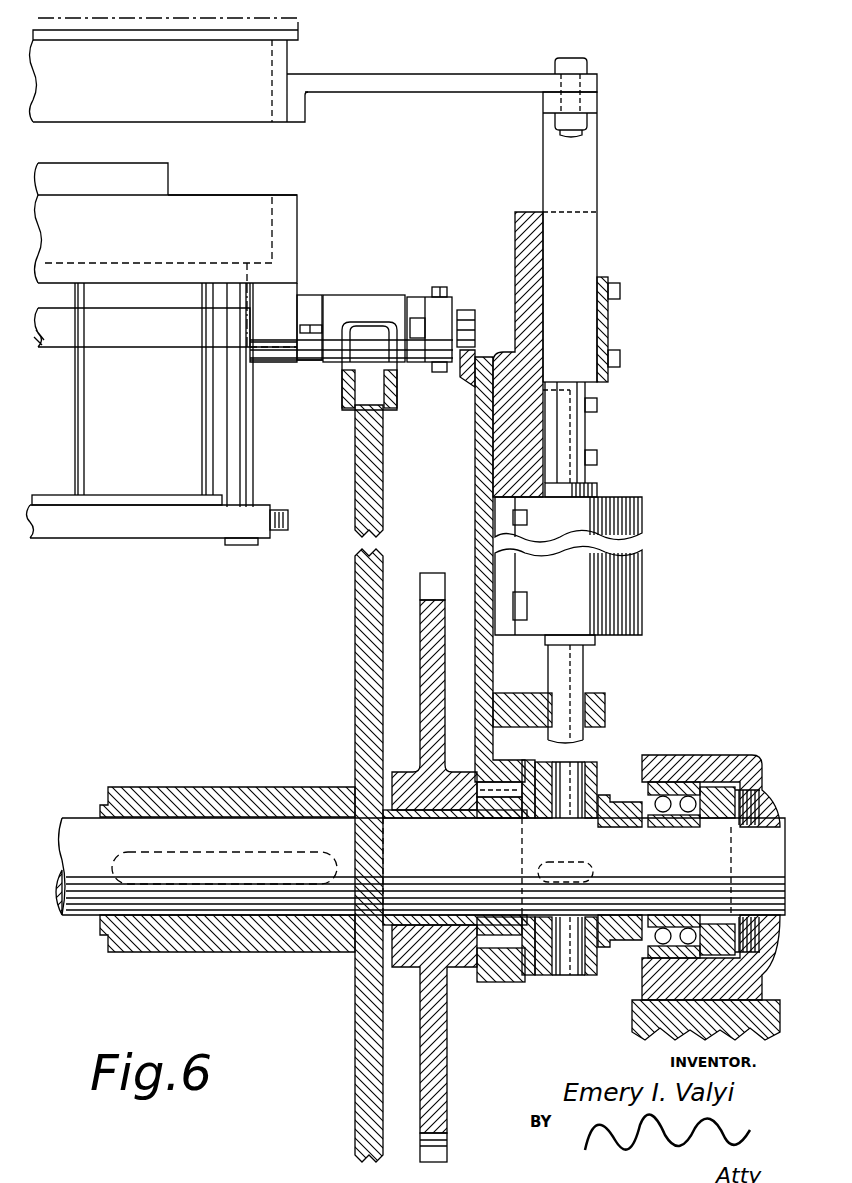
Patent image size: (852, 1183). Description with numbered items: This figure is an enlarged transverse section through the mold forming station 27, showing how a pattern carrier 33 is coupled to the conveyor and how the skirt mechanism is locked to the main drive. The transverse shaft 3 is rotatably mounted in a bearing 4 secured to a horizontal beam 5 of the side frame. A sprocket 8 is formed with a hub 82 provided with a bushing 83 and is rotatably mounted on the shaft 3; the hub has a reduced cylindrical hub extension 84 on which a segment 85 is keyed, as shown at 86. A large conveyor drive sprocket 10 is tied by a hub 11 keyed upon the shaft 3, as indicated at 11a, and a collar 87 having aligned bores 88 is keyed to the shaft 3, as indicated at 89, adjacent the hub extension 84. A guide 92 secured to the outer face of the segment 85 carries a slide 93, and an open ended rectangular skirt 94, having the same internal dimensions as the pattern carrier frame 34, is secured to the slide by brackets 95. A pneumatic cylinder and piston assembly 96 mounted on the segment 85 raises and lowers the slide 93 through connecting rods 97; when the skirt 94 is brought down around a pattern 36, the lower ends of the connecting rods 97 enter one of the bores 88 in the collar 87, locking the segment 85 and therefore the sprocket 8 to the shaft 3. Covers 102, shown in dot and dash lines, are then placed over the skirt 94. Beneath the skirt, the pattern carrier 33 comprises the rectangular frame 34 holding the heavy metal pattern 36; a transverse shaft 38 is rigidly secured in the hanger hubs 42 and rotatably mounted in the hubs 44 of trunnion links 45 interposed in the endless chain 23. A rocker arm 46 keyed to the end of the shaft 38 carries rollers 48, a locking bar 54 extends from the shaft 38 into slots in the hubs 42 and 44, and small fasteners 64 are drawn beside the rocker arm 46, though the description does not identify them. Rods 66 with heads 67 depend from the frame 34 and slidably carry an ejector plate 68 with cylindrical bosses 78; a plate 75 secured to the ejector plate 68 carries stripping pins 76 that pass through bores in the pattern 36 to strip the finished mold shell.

The covers 102 is at (305, 25).
The open ended rectangular skirt 94 is at (256, 115).
The brackets 95 is at (419, 76).
The slide 93 is at (585, 190).
The guide 92 is at (514, 234).
The segments 85 is at (474, 497).
The pattern 36 is at (173, 180).
The pattern carrier 33 is at (308, 235).
The rectangular frame 34 is at (229, 207).
The endless chain 23 is at (356, 420).
The hubs of the hangers 42 is at (316, 300).
The locking bar 54 is at (350, 333).
The hubs of the trunnion links 44 is at (368, 300).
The trunnion links 45 is at (334, 386).
The rocker arm 46 is at (452, 306).
The screw 64 is at (441, 287).
The rollers 48 is at (469, 324).
The mold forming station 27 is at (177, 466).
The transverse shaft 38 is at (190, 338).
The stripping pins 76 is at (86, 416).
The rods 66 is at (250, 452).
The plate 75 is at (130, 497).
The ejector plate 68 is at (144, 528).
The cylindrical bosses 78 is at (289, 523).
The heads 67 is at (243, 547).
The large sprockets 10 is at (354, 628).
The pneumatic cylinder and piston assemblies 96 is at (575, 588).
The connecting rods 97 is at (588, 438).
The hub 11 is at (215, 797).
The transverse shaft 3 is at (362, 866).
The key 11a is at (276, 849).
The key 89 is at (550, 861).
The hubs 82 is at (437, 787).
The bushings 83 is at (428, 820).
The sprockets 8 is at (449, 1063).
The keys 86 is at (488, 798).
The hub extension 84 is at (490, 933).
The collar 87 is at (543, 972).
The bores 88 is at (580, 775).
The bearings 4 is at (722, 766).
The horizontal beams 5 is at (633, 1020).